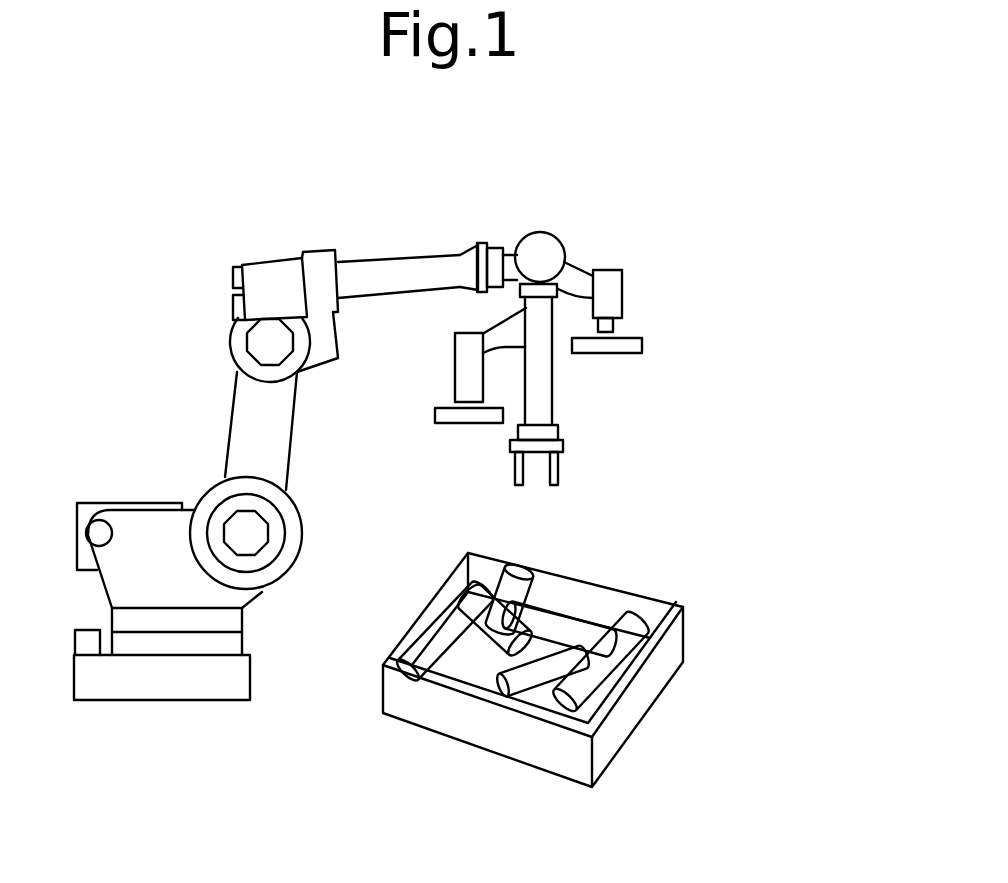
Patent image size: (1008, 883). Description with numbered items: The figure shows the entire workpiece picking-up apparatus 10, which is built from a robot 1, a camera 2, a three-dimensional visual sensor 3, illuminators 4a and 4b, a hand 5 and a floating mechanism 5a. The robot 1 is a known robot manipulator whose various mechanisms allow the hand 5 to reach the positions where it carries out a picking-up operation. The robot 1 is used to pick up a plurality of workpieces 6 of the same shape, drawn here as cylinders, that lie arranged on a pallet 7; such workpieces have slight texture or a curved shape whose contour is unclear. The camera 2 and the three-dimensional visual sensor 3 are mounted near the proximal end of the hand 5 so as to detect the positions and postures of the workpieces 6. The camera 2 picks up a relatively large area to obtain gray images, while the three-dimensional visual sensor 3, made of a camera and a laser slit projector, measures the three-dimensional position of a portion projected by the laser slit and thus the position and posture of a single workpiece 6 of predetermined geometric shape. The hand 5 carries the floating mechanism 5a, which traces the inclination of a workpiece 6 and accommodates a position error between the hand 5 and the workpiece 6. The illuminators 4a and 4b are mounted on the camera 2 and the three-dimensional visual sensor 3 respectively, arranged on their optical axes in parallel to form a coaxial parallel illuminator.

The robot 1 is at (207, 493).
The camera 2 is at (622, 290).
The three-dimensional visual sensor 3 is at (463, 333).
The illuminator 4a is at (630, 350).
The illuminator 4b is at (448, 417).
The hand 5 is at (562, 463).
The floating mechanism 5a is at (548, 433).
The workpieces 6 is at (563, 612).
The pallet 7 is at (685, 662).
The workpiece picking-up apparatus 10 is at (782, 409).